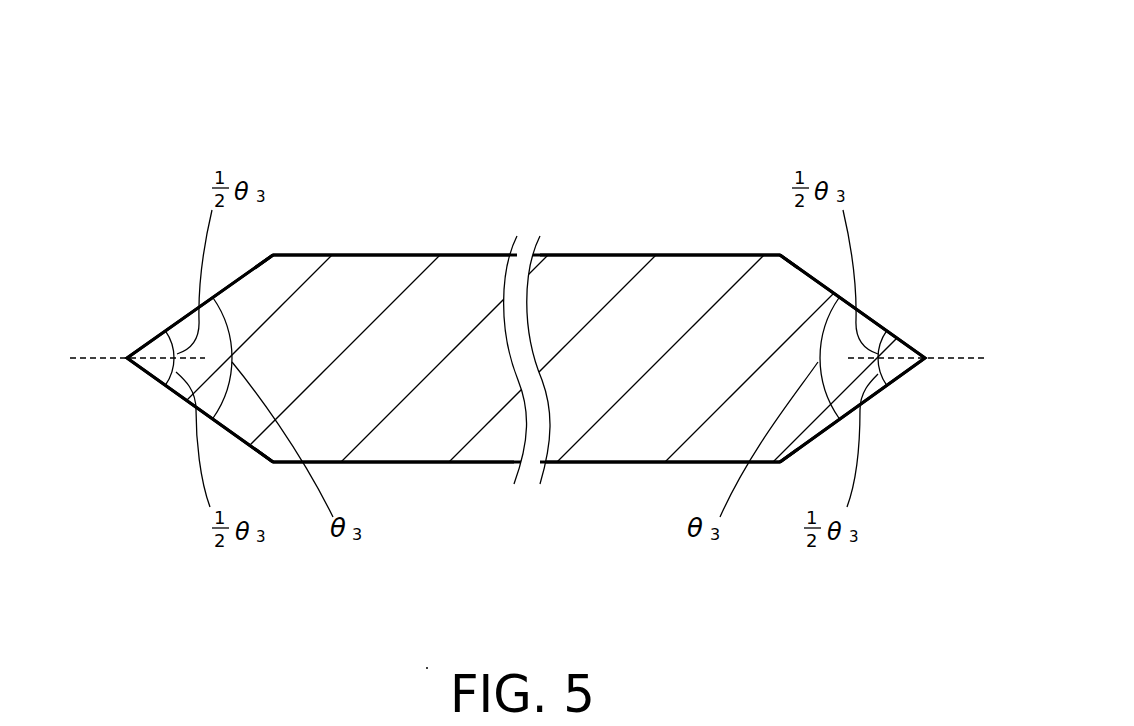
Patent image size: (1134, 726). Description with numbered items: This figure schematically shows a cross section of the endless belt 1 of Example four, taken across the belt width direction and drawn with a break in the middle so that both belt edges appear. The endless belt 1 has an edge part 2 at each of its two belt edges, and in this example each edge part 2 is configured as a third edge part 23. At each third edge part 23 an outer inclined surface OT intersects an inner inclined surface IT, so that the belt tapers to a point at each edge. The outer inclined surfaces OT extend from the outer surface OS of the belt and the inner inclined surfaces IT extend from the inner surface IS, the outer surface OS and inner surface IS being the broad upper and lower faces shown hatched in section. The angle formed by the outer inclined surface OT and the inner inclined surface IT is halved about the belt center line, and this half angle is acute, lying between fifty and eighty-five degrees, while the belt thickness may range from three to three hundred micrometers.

The endless belt 1 is at (781, 141).
The edge part 2 is at (526, 284).
The third edge part 23 is at (165, 332).
The outer inclined surface OT is at (262, 268).
The outer surface OS is at (370, 255).
The inner surface IS is at (413, 462).
The inner inclined surface IT is at (258, 452).